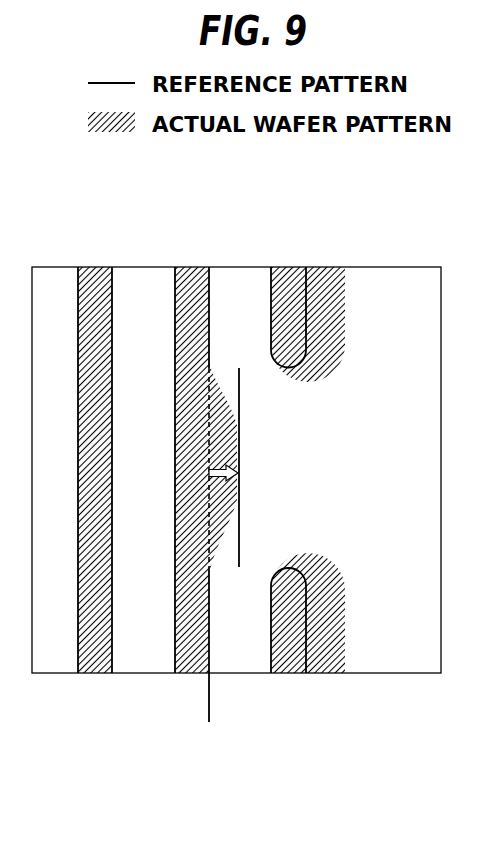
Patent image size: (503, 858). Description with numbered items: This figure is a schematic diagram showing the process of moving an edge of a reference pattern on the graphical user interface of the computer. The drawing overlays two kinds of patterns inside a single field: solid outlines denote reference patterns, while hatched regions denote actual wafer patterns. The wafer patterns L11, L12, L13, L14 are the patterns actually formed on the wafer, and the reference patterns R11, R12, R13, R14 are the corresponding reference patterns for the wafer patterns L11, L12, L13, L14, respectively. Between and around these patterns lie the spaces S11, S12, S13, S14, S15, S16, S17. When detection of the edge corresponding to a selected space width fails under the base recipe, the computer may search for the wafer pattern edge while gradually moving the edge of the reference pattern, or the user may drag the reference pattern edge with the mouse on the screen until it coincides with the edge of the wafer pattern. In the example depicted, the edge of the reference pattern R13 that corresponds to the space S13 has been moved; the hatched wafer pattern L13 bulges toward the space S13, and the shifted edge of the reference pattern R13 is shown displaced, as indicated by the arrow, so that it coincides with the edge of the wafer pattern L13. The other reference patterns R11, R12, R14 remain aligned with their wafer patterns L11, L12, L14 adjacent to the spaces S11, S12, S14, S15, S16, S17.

The reference pattern R11 is at (271, 297).
The reference pattern R12 is at (270, 653).
The reference pattern R13 is at (174, 297).
The reference pattern R14 is at (78, 297).
The wafer pattern L11 is at (287, 295).
The wafer pattern L12 is at (292, 658).
The wafer pattern L13 is at (193, 652).
The wafer pattern L14 is at (100, 652).
The space S11 is at (393, 328).
The space S12 is at (393, 612).
The space S13 is at (340, 467).
The space S14 is at (240, 318).
The space S15 is at (240, 622).
The space S16 is at (143, 470).
The space S17 is at (55, 470).